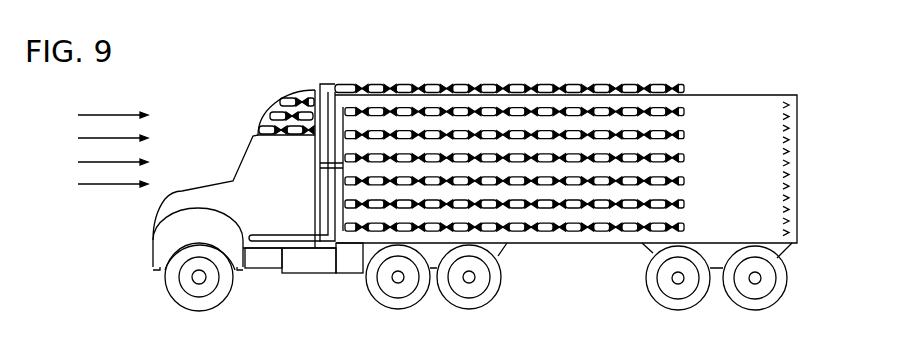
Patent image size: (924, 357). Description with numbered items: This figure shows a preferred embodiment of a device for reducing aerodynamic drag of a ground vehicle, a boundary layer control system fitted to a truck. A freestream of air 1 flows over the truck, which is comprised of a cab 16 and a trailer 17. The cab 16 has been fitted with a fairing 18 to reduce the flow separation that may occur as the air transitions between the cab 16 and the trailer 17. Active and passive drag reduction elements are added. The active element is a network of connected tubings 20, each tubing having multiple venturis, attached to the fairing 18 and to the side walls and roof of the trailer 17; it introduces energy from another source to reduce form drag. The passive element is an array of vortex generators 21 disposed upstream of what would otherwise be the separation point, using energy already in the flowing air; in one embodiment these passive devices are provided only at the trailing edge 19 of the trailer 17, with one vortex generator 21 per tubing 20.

The freestream of air 1 is at (100, 185).
The cab 16 is at (302, 246).
The trailer 17 is at (570, 238).
The fairing 18 is at (318, 85).
The trailing edge 19 is at (786, 96).
The tubings 20 is at (258, 133).
The vortex generators 21 is at (786, 232).